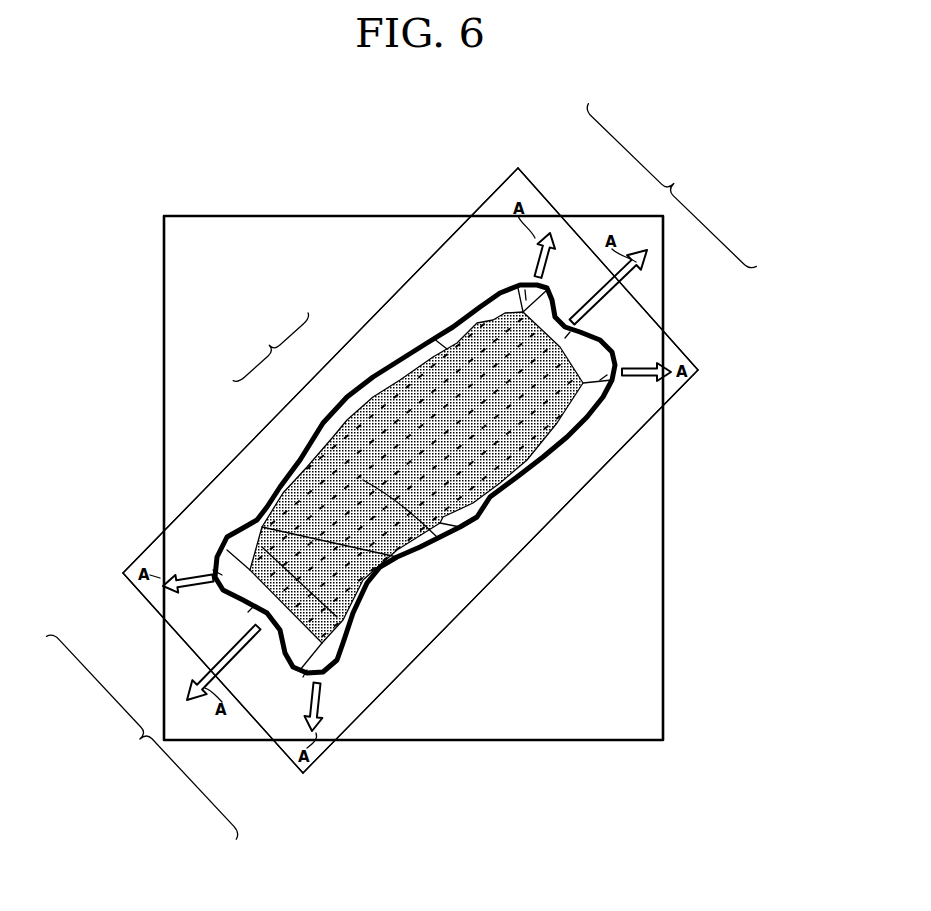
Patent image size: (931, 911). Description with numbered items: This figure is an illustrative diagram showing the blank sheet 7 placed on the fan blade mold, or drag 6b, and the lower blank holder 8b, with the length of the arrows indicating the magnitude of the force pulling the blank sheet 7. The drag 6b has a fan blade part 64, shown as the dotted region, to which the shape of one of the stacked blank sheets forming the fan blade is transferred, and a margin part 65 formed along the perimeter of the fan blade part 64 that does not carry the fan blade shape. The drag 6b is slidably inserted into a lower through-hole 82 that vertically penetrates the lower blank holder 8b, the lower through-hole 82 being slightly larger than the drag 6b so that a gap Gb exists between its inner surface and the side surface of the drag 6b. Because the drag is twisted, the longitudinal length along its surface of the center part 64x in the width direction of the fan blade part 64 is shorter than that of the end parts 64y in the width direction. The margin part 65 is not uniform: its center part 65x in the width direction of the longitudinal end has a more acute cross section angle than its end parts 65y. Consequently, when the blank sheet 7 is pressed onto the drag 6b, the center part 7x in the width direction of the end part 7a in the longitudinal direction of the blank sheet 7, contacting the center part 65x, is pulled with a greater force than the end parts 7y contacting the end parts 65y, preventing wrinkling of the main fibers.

The blank sheet 7 is at (628, 448).
The end part in the longitudinal direction of the blank sheet 7a is at (402, 472).
The center part in the width direction of the blank sheet 7x is at (626, 290).
The end parts in the width direction of the blank sheet 7y is at (532, 182).
The lower blank holder 8b is at (630, 596).
The lower through-hole 82 is at (541, 472).
The fan blade mold (drag) 6b is at (425, 471).
The fan blade part 64 is at (325, 473).
The center part in the width direction of the fan blade part 64x is at (397, 558).
The end parts in the width direction of the fan blade part 64y is at (405, 532).
The margin part 65 is at (385, 378).
The center part in the width direction of the margin part 65x is at (565, 338).
The end parts in the width direction of the margin part 65y is at (526, 290).
The gap Gb is at (460, 527).